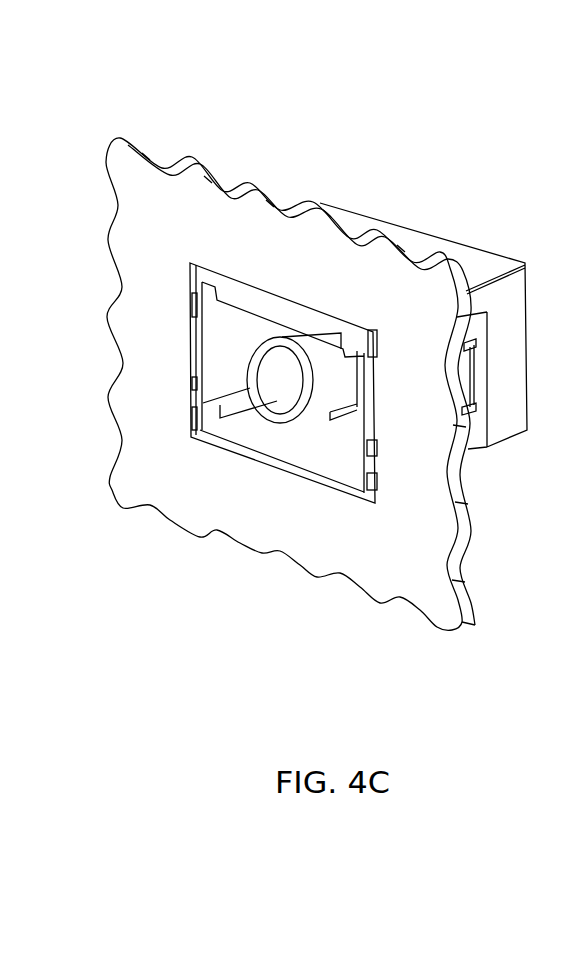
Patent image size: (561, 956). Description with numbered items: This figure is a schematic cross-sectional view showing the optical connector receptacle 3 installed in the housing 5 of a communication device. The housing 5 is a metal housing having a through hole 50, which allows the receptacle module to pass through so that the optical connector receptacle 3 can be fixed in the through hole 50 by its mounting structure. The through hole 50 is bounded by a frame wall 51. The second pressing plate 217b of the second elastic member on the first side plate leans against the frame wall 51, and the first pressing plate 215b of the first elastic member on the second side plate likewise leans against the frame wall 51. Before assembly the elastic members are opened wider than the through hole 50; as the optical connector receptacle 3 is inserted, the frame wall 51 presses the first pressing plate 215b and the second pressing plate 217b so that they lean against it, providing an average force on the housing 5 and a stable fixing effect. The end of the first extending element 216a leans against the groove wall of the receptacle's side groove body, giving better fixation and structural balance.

The optical connector receptacle 3 is at (431, 209).
The housing 5 is at (176, 145).
The through hole 50 is at (243, 456).
The frame wall 51 is at (193, 349).
The first pressing plate 215b is at (196, 386).
The first extending element 216a is at (197, 437).
The second pressing plate 217b is at (370, 328).